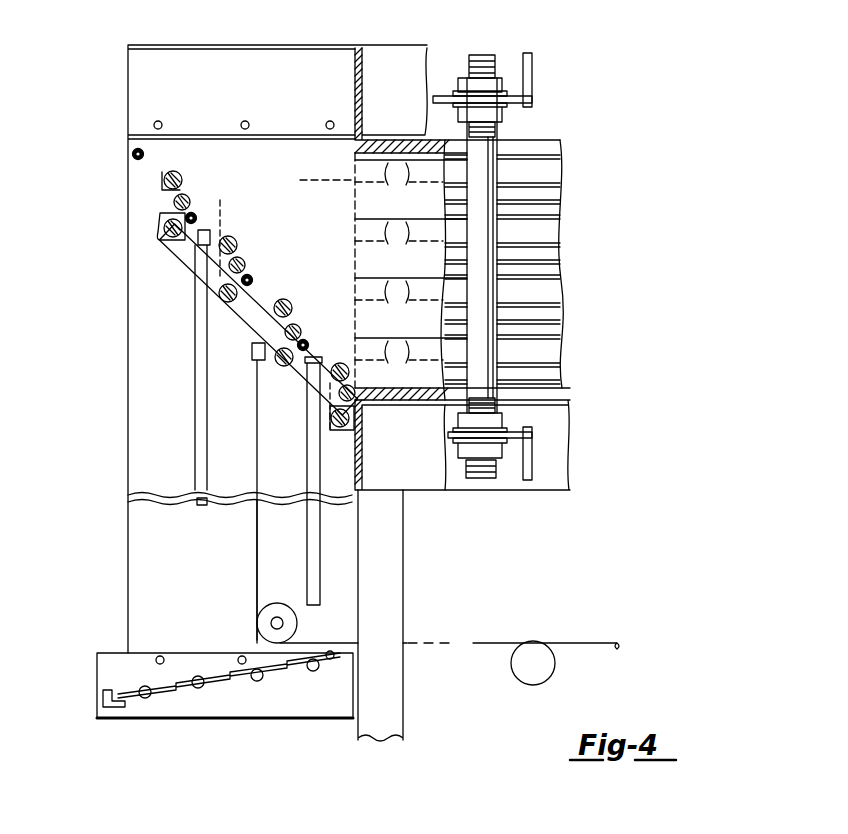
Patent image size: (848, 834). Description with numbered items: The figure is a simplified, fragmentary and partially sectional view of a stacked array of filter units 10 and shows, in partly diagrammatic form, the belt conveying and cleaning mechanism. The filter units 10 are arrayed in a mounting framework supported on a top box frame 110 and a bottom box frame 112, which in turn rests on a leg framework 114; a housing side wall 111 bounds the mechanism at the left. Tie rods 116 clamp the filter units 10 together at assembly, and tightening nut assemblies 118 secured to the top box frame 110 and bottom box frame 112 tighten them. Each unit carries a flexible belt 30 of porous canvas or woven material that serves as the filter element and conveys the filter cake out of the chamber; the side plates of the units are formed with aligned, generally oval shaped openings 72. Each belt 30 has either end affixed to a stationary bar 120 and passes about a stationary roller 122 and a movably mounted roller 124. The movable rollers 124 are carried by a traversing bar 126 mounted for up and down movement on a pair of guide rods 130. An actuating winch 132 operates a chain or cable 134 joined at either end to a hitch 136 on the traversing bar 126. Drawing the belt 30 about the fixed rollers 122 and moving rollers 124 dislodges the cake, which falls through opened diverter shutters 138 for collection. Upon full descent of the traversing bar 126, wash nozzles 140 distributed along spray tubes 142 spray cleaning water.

The filter unit 10 is at (612, 152).
The flexible belt 30 is at (303, 151).
The oval shaped opening 72 is at (404, 183).
The top box frame 110 is at (364, 47).
The housing side panel 111 is at (130, 248).
The bottom box frame 112 is at (404, 494).
The leg framework 114 is at (403, 722).
The tie rod 116 is at (498, 32).
The tightening nut assembly 118 is at (505, 115).
The stationary bar 120 is at (174, 203).
The stationary roller 122 is at (164, 180).
The movably mounted roller 124 is at (160, 240).
The traversing bar 126 is at (200, 275).
The guide rod 130 is at (193, 445).
The actuating winch 132 is at (544, 676).
The chain or cable 134 is at (257, 537).
The hitch 136 is at (252, 360).
The diverter shutter 138 is at (190, 685).
The wash nozzle 140 is at (133, 153).
The spray tube 142 is at (110, 698).